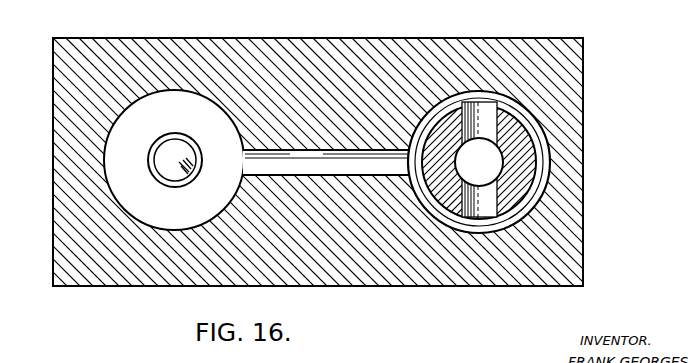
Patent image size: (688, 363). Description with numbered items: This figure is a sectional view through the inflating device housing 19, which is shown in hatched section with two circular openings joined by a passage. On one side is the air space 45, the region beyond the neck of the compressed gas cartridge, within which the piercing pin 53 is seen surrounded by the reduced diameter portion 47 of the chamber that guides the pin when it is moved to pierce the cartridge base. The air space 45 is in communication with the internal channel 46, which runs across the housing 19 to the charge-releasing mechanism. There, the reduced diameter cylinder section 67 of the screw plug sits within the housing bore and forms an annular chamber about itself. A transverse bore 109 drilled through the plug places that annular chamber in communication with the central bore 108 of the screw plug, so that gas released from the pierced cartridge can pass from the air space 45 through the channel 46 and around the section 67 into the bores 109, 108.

The inflating device housing 19 is at (571, 69).
The air space 45 is at (173, 107).
The reduced diameter portion of chamber 47 is at (157, 180).
The piercing pin 53 is at (165, 153).
The internal channel 46 is at (305, 154).
The cylinder section of reduced diameter 67 is at (520, 144).
The transverse bore 109 is at (492, 126).
The central bore 108 is at (495, 158).